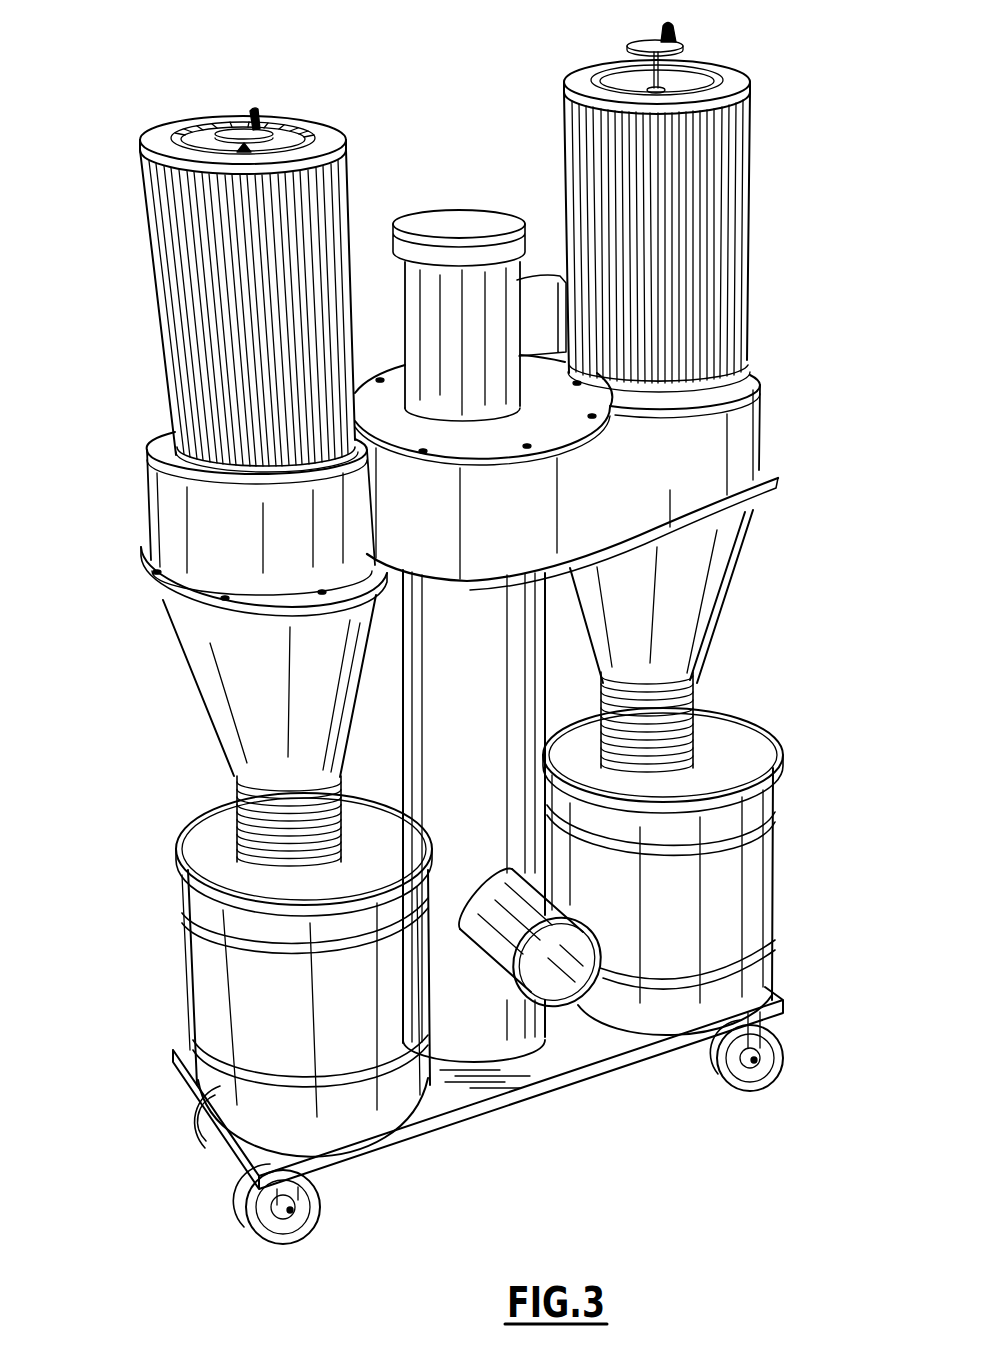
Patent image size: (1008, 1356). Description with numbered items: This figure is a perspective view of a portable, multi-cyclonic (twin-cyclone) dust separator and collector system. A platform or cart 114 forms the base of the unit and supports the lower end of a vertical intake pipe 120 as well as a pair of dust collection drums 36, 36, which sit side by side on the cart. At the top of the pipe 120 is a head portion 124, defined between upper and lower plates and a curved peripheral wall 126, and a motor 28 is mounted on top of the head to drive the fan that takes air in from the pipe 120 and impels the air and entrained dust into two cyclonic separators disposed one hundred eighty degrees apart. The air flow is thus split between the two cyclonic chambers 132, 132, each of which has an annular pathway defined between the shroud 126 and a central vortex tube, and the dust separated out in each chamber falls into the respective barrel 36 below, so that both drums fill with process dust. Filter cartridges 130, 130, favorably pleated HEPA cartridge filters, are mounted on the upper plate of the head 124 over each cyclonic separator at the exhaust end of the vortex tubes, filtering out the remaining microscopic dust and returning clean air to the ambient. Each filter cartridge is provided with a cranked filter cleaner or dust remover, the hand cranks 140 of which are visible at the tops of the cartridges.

The motor 28 is at (455, 218).
The dust collection drum 36 is at (198, 1010).
The platform or cart 114 is at (497, 1118).
The vertical intake pipe 120 is at (437, 757).
The head portion 124 is at (774, 402).
The curved peripheral wall 126 is at (755, 358).
The filter cartridge 130 is at (162, 377).
The cyclonic separator chamber 132 is at (196, 682).
The hand crank 140 is at (693, 43).